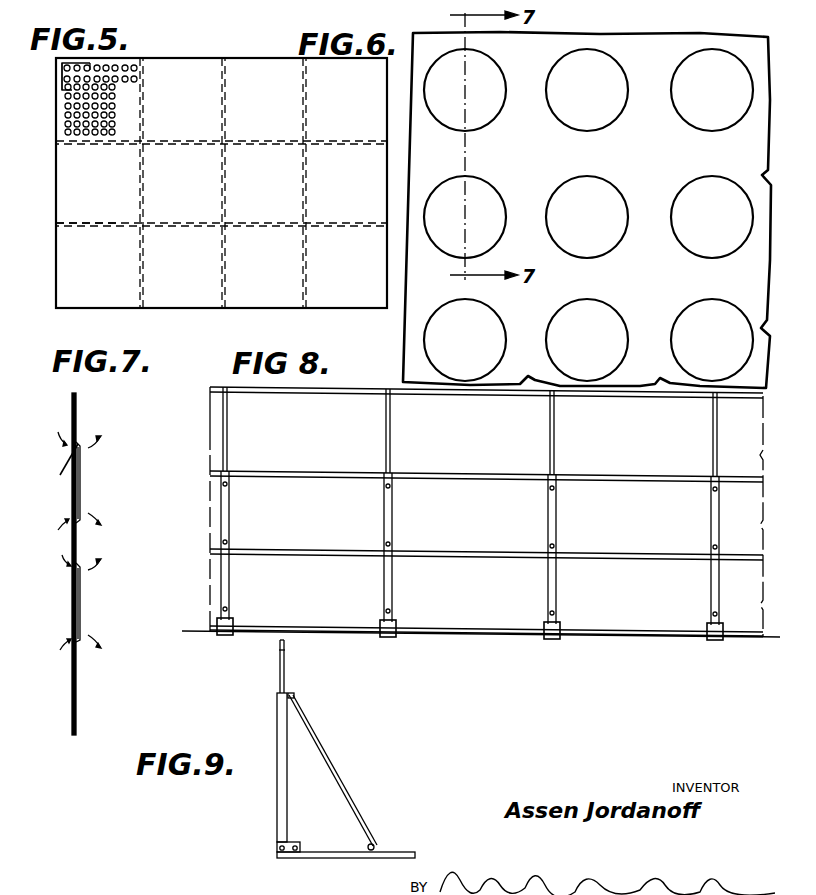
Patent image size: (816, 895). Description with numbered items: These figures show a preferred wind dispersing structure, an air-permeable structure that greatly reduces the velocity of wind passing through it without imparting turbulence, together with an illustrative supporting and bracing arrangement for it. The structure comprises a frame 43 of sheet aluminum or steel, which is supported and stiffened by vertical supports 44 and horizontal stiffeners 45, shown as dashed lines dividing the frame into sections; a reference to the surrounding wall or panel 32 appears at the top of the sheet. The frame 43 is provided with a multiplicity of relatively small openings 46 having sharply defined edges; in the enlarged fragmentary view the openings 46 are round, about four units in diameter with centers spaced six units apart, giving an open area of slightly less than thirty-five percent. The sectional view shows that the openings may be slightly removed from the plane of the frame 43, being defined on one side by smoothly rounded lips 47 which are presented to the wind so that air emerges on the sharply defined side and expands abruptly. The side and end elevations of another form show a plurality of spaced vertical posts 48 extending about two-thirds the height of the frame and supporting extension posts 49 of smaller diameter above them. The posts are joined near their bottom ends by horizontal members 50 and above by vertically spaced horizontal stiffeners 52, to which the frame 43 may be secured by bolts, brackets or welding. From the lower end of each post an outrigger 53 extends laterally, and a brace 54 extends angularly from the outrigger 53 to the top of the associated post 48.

In FIG. 5, the wall panel 32 is at (238, 0).
In FIG. 5, the frame 43 is at (56, 180).
In FIG. 6, the frame 43 is at (655, 293).
In FIG. 7, the frame 43 is at (76, 420).
In FIG. 5, the vertical supports 44 is at (138, 282).
In FIG. 5, the horizontal stiffeners 45 is at (80, 226).
In FIG. 5, the openings 46 is at (64, 124).
In FIG. 6, the openings 46 is at (688, 64).
In FIG. 7, the openings 46 is at (79, 485).
In FIG. 7, the rounded lips 47 is at (66, 541).
In FIG. 8, the vertical posts 48 is at (230, 585).
In FIG. 9, the vertical posts 48 is at (277, 805).
In FIG. 8, the extension posts 49 is at (228, 443).
In FIG. 9, the extension posts 49 is at (285, 684).
In FIG. 8, the horizontal members 50 is at (322, 627).
In FIG. 8, the horizontal stiffeners 52 is at (310, 395).
In FIG. 9, the outrigger 53 is at (334, 860).
In FIG. 9, the brace 54 is at (338, 772).